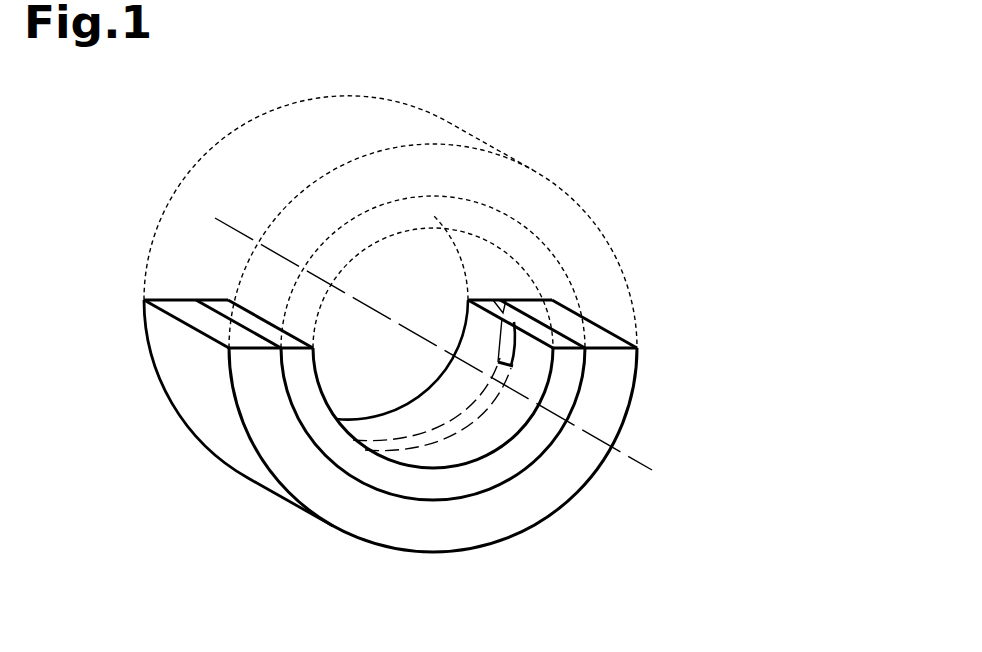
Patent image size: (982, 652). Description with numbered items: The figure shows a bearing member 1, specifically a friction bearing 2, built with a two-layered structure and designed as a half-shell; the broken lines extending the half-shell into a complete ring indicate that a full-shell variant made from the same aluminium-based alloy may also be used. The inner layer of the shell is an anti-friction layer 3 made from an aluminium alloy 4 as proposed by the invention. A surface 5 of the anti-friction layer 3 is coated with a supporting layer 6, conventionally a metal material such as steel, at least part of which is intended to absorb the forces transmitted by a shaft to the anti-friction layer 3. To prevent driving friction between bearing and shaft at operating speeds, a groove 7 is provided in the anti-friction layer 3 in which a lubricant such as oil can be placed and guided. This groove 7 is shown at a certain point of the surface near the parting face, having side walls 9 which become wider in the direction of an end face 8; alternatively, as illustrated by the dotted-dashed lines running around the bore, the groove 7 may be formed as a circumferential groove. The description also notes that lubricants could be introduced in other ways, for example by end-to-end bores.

The bearing member 1 is at (498, 123).
The friction bearing 2 is at (592, 177).
The anti-friction layer 3 is at (442, 482).
The aluminium alloy 4 is at (363, 465).
The surface 5 is at (513, 480).
The supporting layer 6 is at (613, 387).
The groove 7 is at (522, 319).
The end face 8 is at (503, 313).
The side walls 9 is at (520, 328).